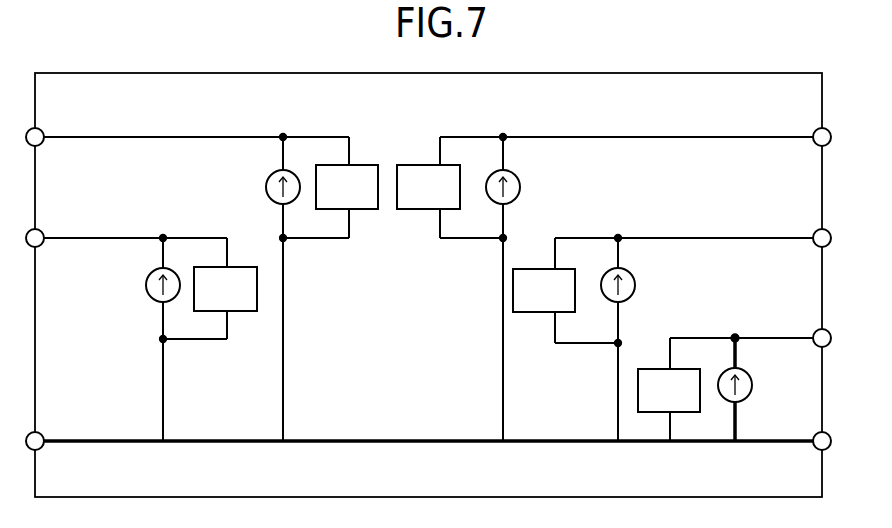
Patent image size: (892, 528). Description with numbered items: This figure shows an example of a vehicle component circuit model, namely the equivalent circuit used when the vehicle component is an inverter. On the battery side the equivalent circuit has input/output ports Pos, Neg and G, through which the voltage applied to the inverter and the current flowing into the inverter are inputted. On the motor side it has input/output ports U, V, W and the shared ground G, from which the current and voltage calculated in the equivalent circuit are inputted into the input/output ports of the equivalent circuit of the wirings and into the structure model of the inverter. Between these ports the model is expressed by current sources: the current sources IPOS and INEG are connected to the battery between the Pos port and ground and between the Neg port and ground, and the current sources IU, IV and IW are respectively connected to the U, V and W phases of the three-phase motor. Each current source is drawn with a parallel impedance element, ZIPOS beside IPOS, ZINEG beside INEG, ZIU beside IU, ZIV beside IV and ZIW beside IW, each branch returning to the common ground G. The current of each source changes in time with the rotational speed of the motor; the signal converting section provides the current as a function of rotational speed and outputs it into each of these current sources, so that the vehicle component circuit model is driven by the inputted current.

The positive input/output port Pos is at (51, 125).
The negative input/output port Neg is at (54, 226).
The ground input/output port G is at (435, 429).
The U-phase input/output port U is at (828, 123).
The V-phase input/output port V is at (827, 226).
The W-phase input/output port W is at (829, 326).
The positive battery current source IPOS is at (258, 188).
The positive rail impedance ZIPOS is at (347, 187).
The negative battery current source INEG is at (143, 289).
The negative rail impedance ZINEG is at (210, 288).
The U-phase current source IU is at (518, 188).
The phase U impedance ZIU is at (428, 187).
The V-phase current source IV is at (671, 291).
The phase V impedance ZIV is at (565, 290).
The W-phase current source IW is at (748, 387).
The phase W impedance ZIW is at (669, 389).